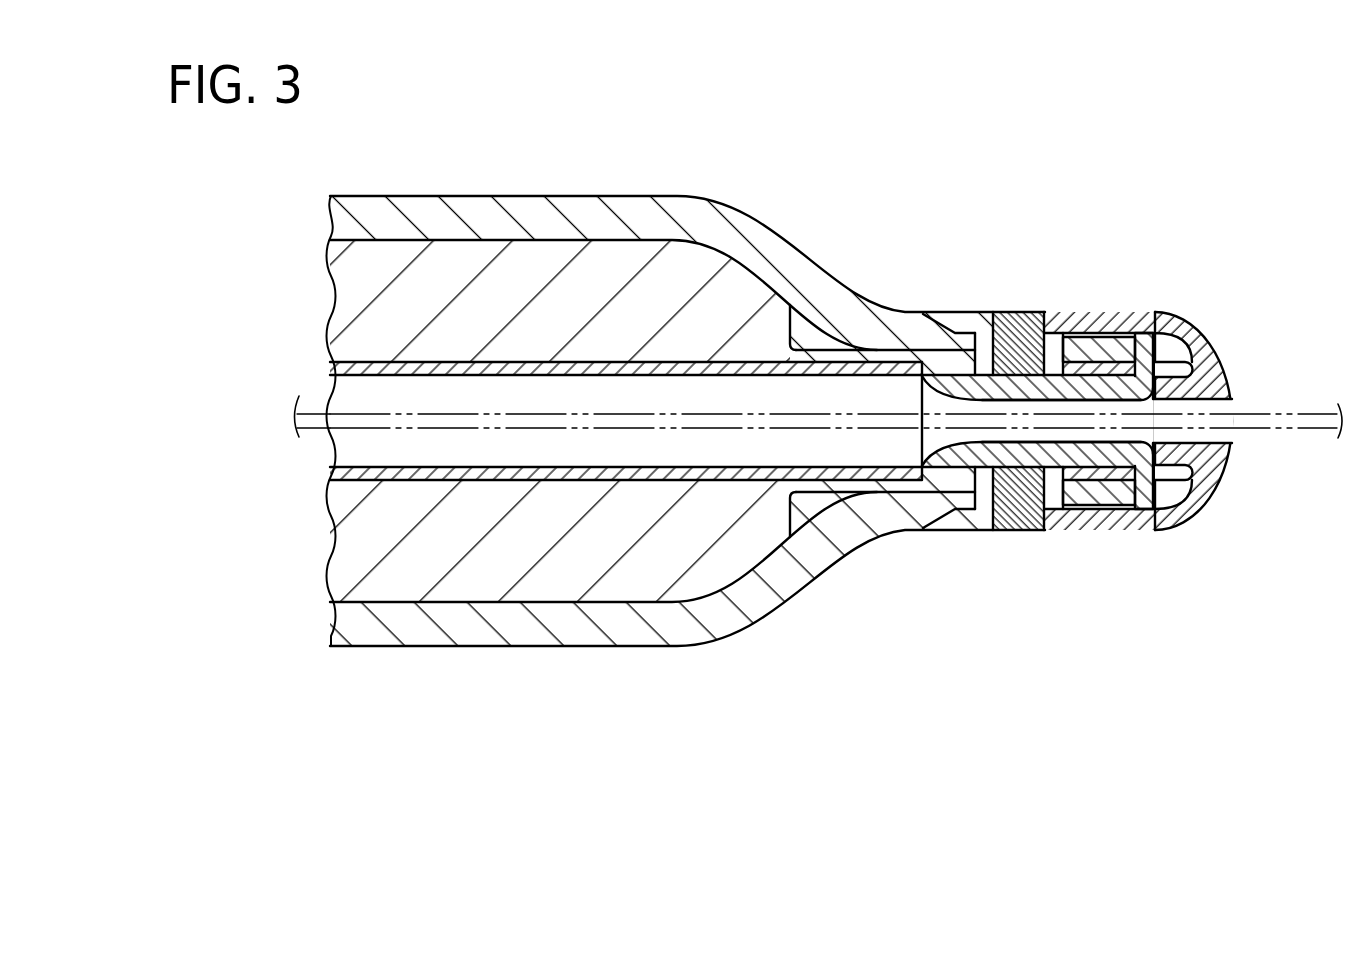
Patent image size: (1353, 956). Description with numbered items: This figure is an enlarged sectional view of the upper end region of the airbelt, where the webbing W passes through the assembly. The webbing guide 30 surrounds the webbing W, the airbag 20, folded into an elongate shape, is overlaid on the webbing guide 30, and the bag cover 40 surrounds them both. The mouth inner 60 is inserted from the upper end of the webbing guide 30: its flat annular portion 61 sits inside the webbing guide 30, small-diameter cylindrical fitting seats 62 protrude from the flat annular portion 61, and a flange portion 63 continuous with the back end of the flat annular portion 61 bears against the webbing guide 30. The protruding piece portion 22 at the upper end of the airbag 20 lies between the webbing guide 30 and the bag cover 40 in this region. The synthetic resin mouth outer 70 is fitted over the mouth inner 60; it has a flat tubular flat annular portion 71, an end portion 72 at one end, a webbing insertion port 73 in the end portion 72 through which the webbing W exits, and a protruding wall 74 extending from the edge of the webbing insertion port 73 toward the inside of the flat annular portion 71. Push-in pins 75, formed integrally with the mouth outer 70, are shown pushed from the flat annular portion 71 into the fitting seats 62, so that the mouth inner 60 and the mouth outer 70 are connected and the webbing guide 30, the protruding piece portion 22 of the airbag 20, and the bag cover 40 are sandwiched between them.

The airbag 20 is at (367, 293).
The protruding piece portion 22 is at (898, 493).
The webbing guide 30 is at (583, 375).
The bag cover 40 is at (687, 196).
The mouth inner 60 is at (999, 421).
The flat annular portion 61 is at (937, 394).
The fitting seat 62 is at (966, 322).
The flange portion 63 is at (1142, 335).
The mouth outer 70 is at (1122, 418).
The flat annular portion 71 is at (1102, 313).
The end portion 72 is at (1226, 368).
The webbing insertion port 73 is at (1218, 438).
The protruding wall 74 is at (1187, 405).
The push-in pin 75 is at (1030, 313).
The webbing W is at (1310, 414).